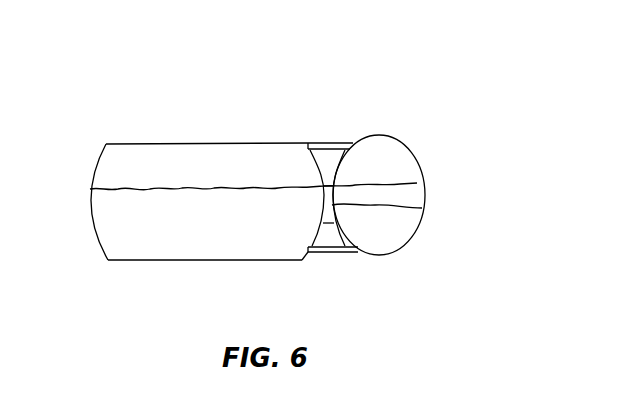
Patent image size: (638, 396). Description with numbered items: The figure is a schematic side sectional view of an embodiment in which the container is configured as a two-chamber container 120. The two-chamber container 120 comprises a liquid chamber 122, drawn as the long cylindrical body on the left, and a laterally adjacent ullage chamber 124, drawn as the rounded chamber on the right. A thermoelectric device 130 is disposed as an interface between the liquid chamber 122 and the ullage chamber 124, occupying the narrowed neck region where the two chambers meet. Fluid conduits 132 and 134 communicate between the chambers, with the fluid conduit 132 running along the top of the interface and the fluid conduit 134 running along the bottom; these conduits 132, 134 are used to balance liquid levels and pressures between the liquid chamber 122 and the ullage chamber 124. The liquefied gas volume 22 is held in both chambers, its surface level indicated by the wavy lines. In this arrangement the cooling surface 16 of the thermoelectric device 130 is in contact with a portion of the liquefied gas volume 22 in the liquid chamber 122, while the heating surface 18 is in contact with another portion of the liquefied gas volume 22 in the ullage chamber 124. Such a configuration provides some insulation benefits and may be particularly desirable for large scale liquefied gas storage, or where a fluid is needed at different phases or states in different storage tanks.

The two-chamber container 120 is at (222, 137).
The liquid chamber 122 is at (142, 162).
The liquefied gas volume 22 is at (210, 240).
The ullage chamber 124 is at (395, 158).
The thermoelectric device 130 is at (342, 182).
The fluid conduit 132 is at (323, 145).
The fluid conduit 134 is at (335, 250).
The cooling surface 16 is at (325, 207).
The heating surface 18 is at (422, 208).